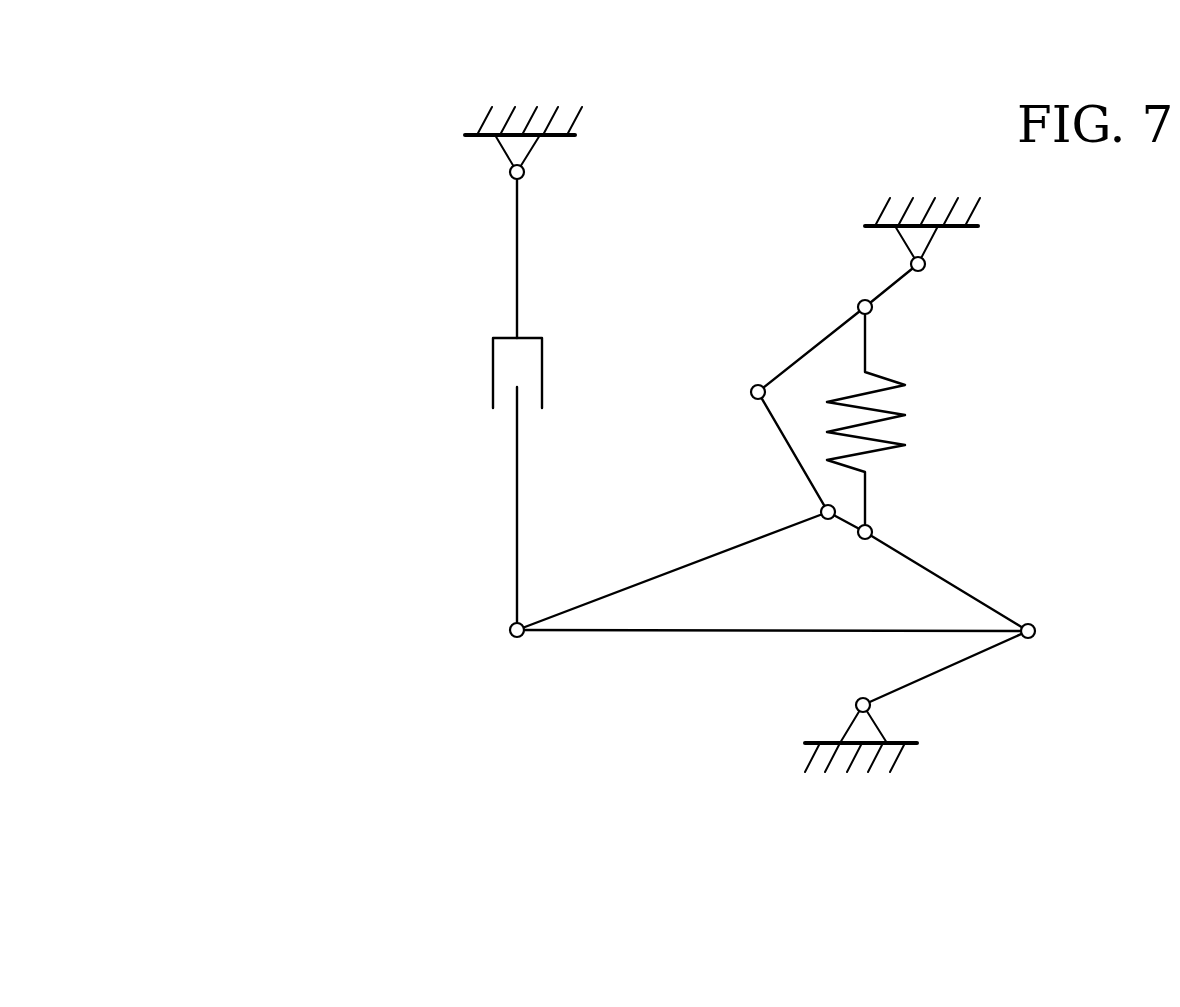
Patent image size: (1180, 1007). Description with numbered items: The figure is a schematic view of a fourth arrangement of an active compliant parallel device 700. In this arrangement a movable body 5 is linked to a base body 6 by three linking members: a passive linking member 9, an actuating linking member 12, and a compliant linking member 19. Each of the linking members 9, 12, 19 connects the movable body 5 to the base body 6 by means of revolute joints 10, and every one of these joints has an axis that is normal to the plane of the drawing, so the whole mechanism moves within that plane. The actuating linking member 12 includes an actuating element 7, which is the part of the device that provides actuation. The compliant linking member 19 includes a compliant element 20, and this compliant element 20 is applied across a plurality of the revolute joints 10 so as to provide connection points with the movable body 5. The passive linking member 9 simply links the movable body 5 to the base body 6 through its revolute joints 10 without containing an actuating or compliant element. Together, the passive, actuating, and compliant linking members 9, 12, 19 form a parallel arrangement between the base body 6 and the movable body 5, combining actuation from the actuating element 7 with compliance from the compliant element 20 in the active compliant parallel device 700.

The active compliant parallel device 700 is at (348, 787).
The base body 6 is at (845, 178).
The actuating element 7 is at (478, 171).
The actuating linking member 12 is at (468, 401).
The compliant linking member 19 is at (841, 396).
The compliant element 20 is at (823, 387).
The movable body 5 is at (965, 580).
The passive linking member 9 is at (1063, 675).
The revolute joints 10 is at (545, 170).